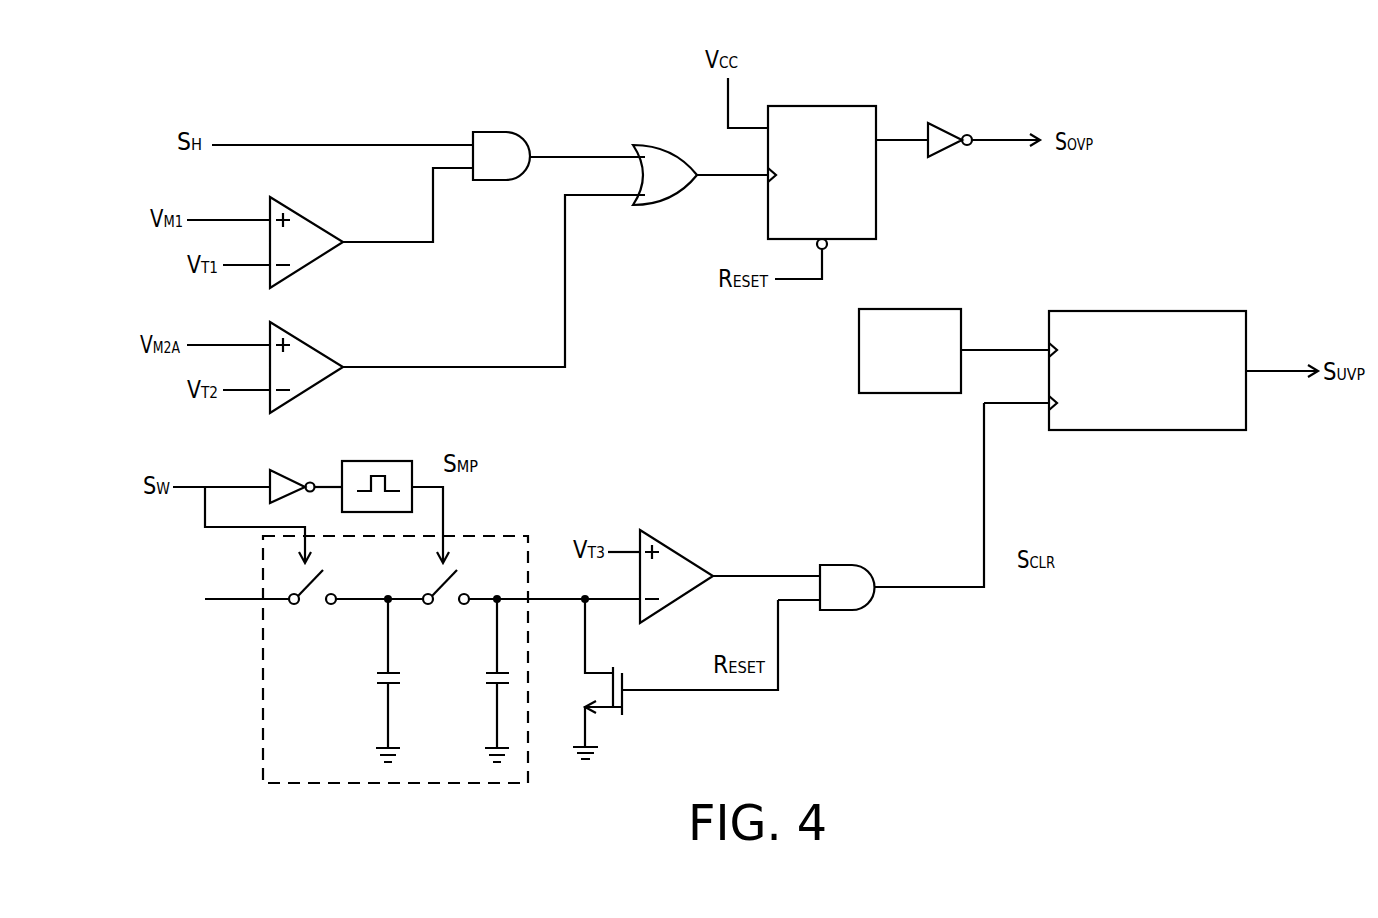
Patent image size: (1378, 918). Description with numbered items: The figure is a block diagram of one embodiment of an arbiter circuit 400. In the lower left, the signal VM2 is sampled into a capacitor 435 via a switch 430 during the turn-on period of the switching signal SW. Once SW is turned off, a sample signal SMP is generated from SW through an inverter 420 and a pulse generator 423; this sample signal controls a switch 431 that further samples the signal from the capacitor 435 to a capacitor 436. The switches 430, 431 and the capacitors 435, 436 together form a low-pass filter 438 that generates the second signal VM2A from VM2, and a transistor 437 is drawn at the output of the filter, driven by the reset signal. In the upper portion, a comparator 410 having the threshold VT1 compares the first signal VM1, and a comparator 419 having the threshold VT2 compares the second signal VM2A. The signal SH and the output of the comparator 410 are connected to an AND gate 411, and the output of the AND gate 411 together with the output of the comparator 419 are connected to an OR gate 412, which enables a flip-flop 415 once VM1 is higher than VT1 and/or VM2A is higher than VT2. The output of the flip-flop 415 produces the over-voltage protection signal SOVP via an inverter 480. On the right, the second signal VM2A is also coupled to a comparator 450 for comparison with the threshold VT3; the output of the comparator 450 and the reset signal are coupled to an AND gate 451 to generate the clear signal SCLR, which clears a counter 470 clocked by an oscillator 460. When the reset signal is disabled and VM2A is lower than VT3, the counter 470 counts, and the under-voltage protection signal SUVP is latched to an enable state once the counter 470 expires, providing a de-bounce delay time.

The arbiter circuit 400 is at (1362, 108).
The comparator 410 is at (307, 217).
The AND gate 411 is at (495, 132).
The OR gate 412 is at (675, 150).
The flip-flop 415 is at (813, 106).
The comparator 419 is at (307, 343).
The inverter 420 is at (288, 470).
The pulse generator 423 is at (375, 461).
The switch 430 is at (315, 607).
The switch 431 is at (450, 607).
The capacitor 435 is at (380, 688).
The capacitor 436 is at (488, 688).
The transistor 437 is at (627, 700).
The low-pass filter 438 is at (405, 673).
The comparator 450 is at (680, 547).
The AND gate 451 is at (837, 565).
The oscillator 460 is at (908, 393).
The counter 470 is at (1147, 311).
The inverter 480 is at (948, 123).